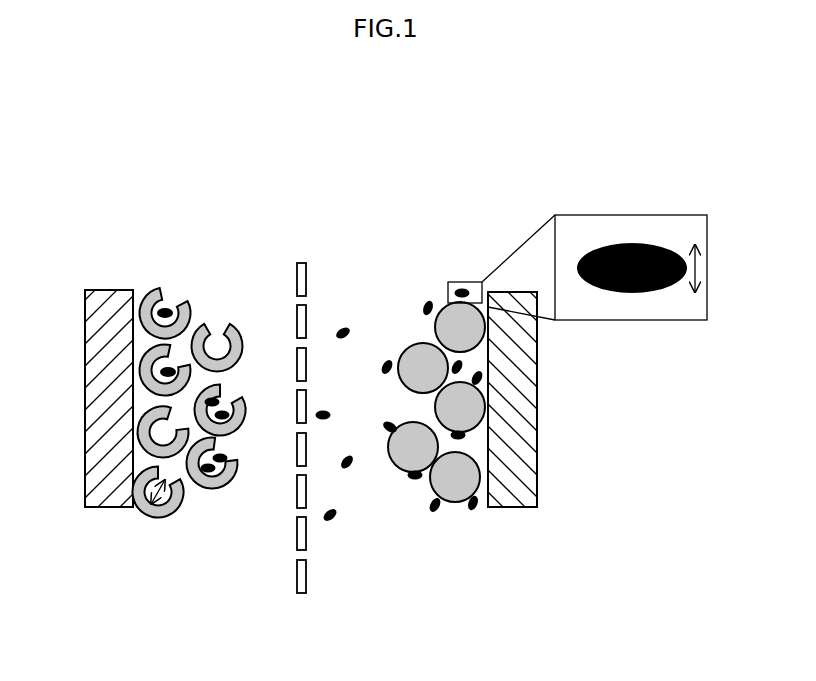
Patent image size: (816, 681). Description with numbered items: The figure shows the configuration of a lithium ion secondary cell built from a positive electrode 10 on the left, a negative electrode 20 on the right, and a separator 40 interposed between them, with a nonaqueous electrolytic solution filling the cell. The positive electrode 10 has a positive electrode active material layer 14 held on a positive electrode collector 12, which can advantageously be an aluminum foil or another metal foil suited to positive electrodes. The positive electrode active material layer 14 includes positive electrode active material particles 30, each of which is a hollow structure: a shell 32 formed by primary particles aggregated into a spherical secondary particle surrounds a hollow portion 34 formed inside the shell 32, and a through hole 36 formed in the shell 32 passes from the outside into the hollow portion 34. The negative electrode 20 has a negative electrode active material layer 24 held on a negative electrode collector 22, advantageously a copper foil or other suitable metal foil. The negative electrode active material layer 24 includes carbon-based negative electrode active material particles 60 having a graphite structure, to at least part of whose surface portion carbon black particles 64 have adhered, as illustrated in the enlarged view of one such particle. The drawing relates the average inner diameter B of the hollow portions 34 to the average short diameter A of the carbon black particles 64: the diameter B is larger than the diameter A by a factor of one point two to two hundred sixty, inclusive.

The positive electrode 10 is at (185, 379).
The positive electrode collector 12 is at (108, 507).
The positive electrode active material layer 14 is at (209, 414).
The negative electrode 20 is at (447, 380).
The negative electrode collector 22 is at (512, 508).
The negative electrode active material layer 24 is at (421, 473).
The positive electrode active material particle 30 is at (209, 367).
The shell 32 is at (230, 330).
The hollow portion 34 is at (218, 347).
The through hole 36 is at (207, 333).
The separator 40 is at (302, 593).
The negative electrode active material particle 60 is at (430, 488).
The carbon black particle 64 is at (348, 330).
The average short diameter of the CB particles A is at (695, 268).
The average inner diameter of the hollow portions B is at (168, 492).